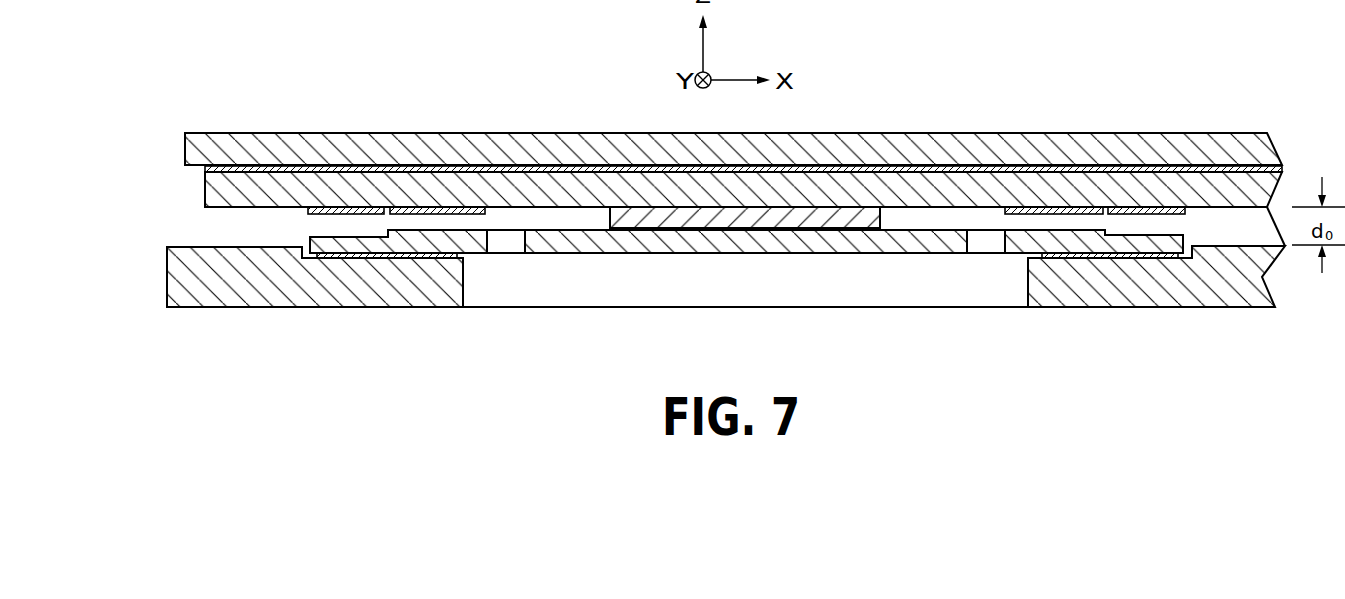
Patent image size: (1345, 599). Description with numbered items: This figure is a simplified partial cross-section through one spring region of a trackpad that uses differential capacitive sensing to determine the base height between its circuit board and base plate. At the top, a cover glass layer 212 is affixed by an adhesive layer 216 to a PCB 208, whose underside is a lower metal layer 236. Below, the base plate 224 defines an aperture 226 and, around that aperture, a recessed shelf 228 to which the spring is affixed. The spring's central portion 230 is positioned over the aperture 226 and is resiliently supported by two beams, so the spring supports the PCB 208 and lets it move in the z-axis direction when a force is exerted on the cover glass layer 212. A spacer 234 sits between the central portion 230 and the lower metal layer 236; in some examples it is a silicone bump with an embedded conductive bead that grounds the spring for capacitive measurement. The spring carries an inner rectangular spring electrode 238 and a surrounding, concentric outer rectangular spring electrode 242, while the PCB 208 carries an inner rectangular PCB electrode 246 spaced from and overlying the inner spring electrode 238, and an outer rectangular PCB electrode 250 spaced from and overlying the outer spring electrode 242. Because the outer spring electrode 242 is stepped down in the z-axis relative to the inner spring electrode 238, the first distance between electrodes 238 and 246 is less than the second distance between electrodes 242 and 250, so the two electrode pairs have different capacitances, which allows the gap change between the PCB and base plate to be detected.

The PCB 208 is at (205, 191).
The cover glass layer 212 is at (185, 154).
The adhesive layer 216 is at (268, 167).
The base plate 224 is at (167, 273).
The aperture 226 is at (833, 288).
The recessed shelf 228 is at (337, 258).
The central portion 230 is at (747, 253).
The spacer 234 is at (880, 221).
The lower metal layer 236 is at (243, 208).
The inner rectangular spring electrode 238 is at (470, 228).
The outer rectangular spring electrode 242 is at (325, 228).
The inner rectangular PCB electrode 246 is at (440, 210).
The outer rectangular PCB electrode 250 is at (348, 211).